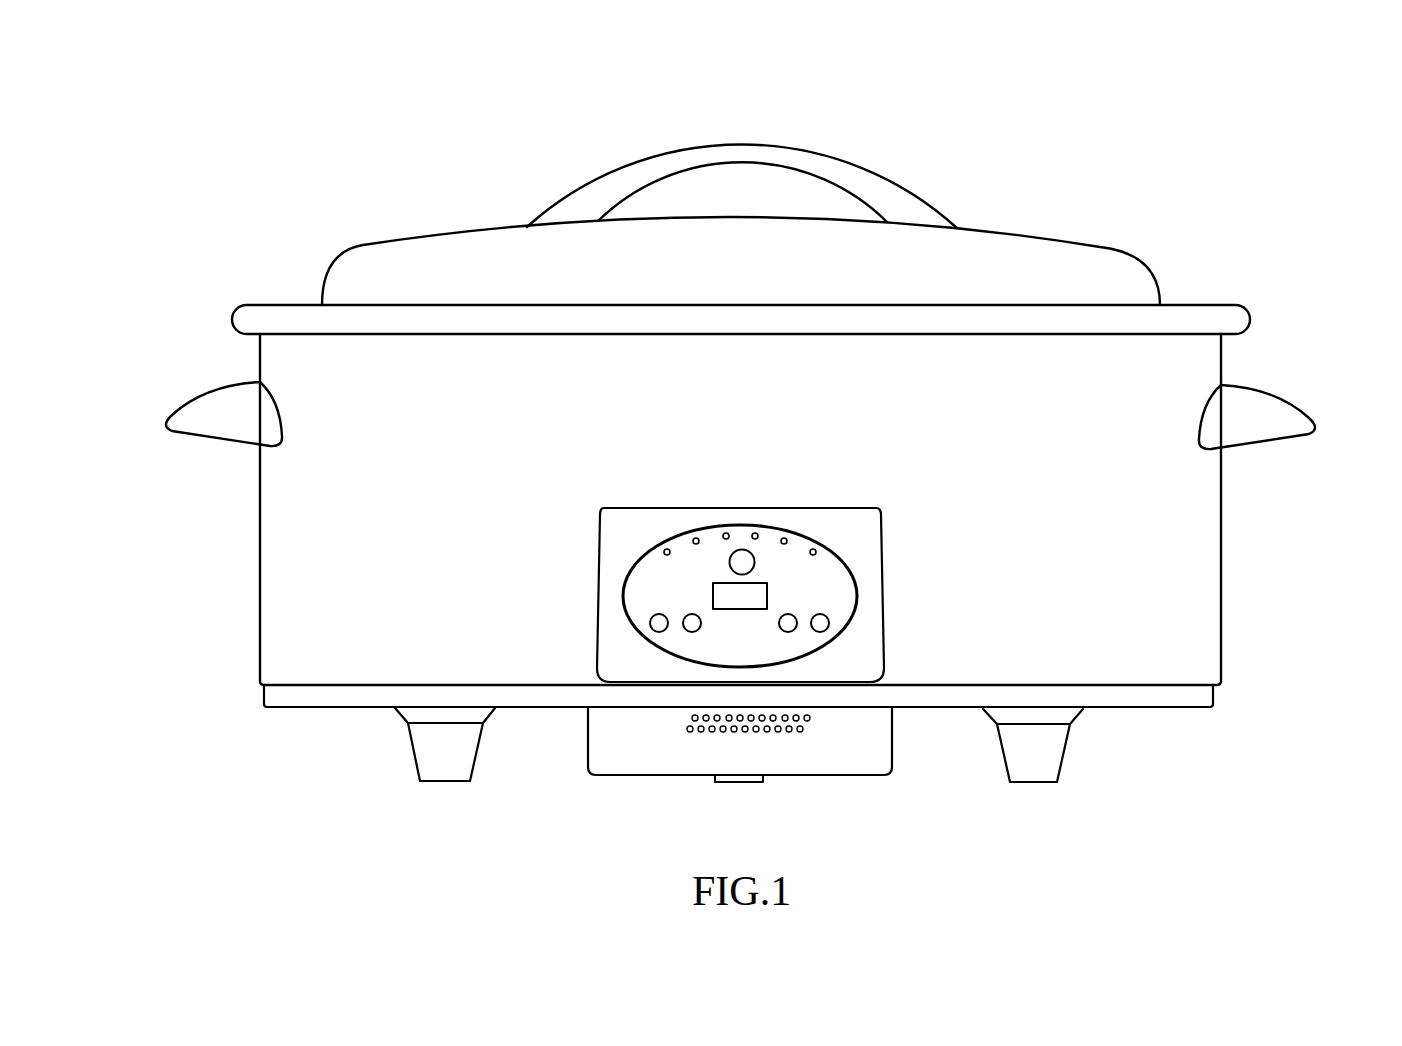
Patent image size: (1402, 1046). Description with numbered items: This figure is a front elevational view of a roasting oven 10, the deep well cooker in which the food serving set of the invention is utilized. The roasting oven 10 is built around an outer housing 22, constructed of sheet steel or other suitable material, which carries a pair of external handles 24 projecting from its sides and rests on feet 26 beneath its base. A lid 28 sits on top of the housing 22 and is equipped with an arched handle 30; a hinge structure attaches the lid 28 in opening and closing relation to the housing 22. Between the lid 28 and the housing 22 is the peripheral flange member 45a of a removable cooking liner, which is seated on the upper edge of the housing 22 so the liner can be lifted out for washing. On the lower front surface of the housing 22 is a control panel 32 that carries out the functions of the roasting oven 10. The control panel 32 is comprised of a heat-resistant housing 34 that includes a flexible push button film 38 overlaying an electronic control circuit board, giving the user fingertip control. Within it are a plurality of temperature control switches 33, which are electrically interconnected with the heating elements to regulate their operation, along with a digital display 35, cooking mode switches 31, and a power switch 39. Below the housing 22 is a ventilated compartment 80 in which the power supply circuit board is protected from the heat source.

The roasting oven 10 is at (1145, 145).
The outer housing 22 is at (1219, 578).
The external handles 24 is at (190, 403).
The feet 26 is at (422, 758).
The lid 28 is at (1093, 247).
The handle 30 is at (788, 148).
The cooking mode switches 31 is at (1003, 565).
The control panel 32 is at (773, 629).
The temperature control switches 33 is at (888, 452).
The heat-resistant housing 34 is at (603, 538).
The digital display 35 is at (768, 584).
The push button film 38 is at (652, 545).
The power switch 39 is at (659, 623).
The peripheral flange member 45a is at (762, 323).
The ventilated compartment 80 is at (658, 757).